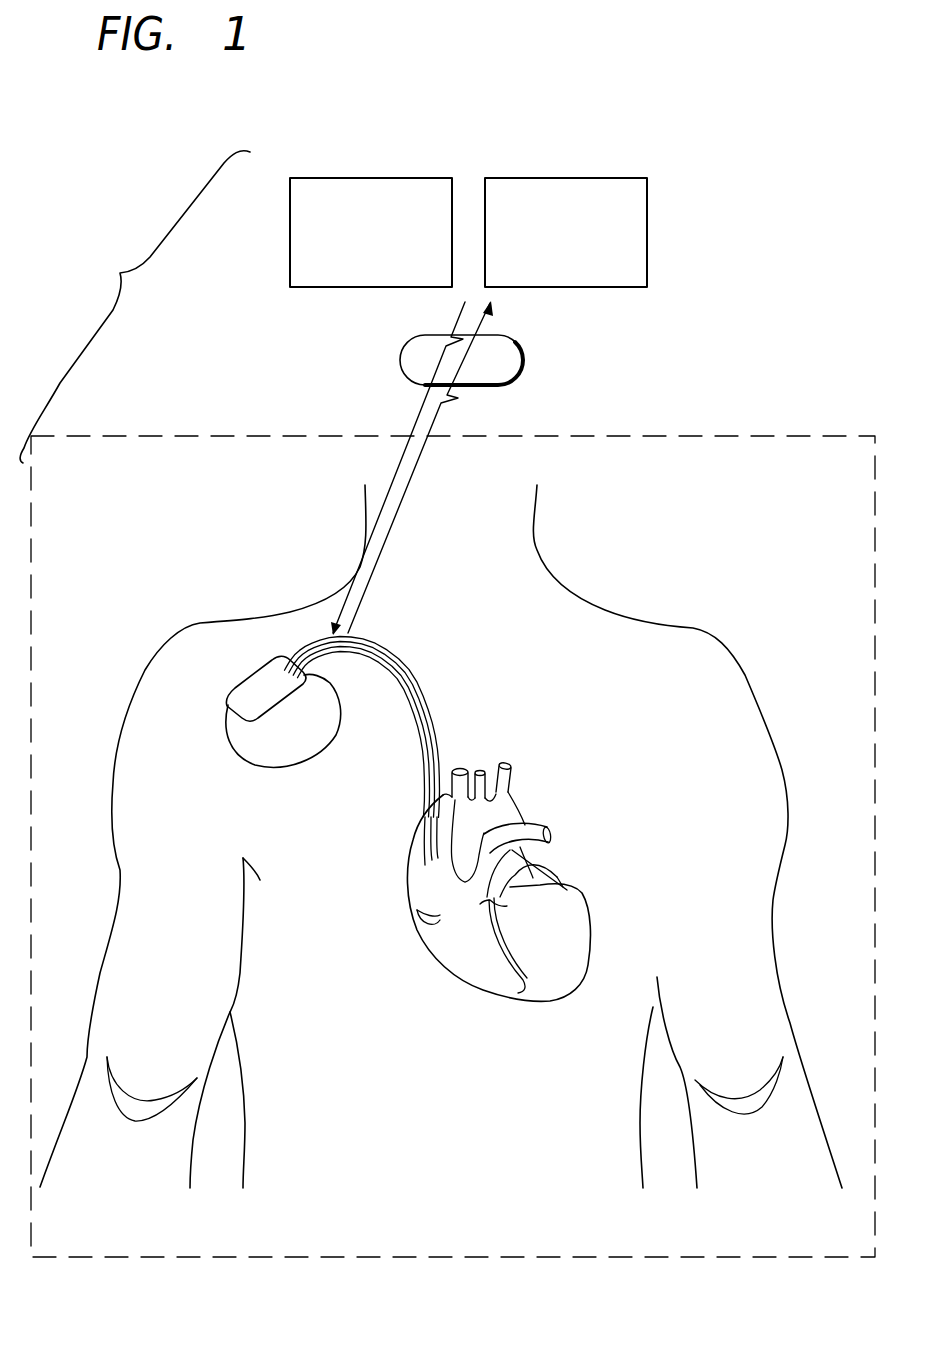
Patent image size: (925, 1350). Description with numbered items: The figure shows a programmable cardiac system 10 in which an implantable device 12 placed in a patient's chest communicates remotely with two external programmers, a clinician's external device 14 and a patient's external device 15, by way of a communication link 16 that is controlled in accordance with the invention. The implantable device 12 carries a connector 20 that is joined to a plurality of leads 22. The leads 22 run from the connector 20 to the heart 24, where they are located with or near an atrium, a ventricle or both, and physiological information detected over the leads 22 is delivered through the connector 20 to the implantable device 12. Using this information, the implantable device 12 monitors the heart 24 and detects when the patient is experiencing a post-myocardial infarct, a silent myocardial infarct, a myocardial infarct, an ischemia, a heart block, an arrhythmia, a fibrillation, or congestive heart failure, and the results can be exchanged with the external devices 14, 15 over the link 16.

The programmable cardiac system 10 is at (93, 252).
The implantable device 12 is at (256, 662).
The clinician's external device 14 is at (388, 178).
The patient's external device 15 is at (568, 178).
The communication link 16 is at (525, 363).
The connector 20 is at (237, 704).
The leads 22 is at (418, 677).
The heart 24 is at (590, 936).